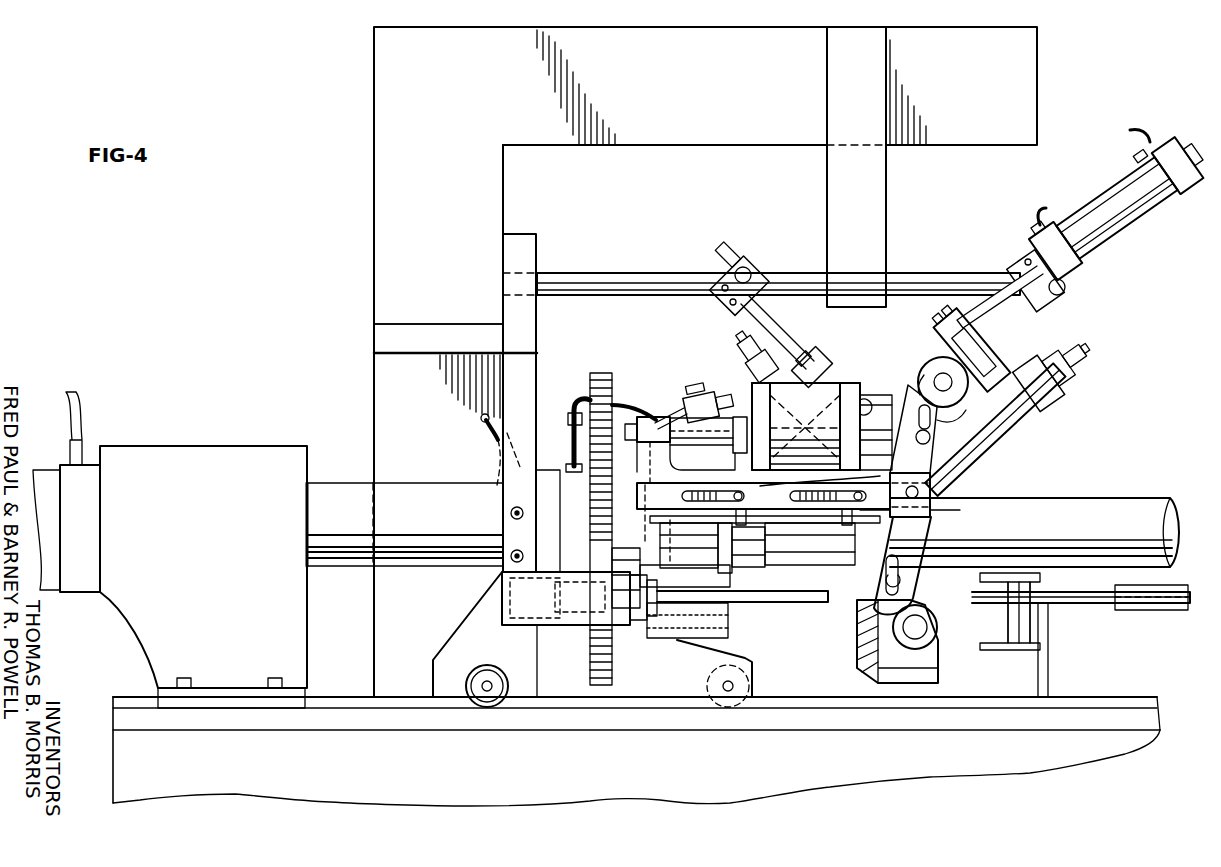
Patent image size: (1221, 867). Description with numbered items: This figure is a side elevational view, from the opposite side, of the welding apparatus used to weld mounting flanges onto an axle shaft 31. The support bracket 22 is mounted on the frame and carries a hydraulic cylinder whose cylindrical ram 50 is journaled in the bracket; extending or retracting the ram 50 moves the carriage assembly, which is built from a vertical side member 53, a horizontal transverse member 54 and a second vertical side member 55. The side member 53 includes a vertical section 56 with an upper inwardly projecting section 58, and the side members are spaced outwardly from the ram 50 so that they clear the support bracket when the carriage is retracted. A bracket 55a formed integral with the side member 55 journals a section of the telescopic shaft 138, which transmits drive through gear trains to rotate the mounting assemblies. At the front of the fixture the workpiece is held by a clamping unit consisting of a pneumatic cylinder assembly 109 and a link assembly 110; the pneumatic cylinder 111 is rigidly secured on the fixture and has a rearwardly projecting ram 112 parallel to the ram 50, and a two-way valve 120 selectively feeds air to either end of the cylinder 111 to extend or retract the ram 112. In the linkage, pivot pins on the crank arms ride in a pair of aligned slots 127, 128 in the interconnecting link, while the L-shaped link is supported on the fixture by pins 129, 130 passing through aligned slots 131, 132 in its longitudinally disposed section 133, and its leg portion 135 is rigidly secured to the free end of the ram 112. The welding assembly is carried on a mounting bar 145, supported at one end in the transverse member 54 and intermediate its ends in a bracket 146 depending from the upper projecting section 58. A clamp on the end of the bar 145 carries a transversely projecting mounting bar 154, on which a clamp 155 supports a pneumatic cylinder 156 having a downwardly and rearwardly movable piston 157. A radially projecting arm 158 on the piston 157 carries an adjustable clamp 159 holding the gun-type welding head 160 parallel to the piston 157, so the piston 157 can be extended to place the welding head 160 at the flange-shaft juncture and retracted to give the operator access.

The support bracket 22 is at (226, 438).
The axle shaft 31 is at (1113, 500).
The cylindrical ram 50 is at (430, 487).
The vertical side member 53 is at (368, 255).
The horizontal transverse member 54 is at (543, 358).
The vertical side member 55 is at (447, 626).
The bracket 55a is at (500, 580).
The vertical section 56 is at (374, 308).
The upper inwardly projecting section 58 is at (686, 152).
The pneumatic cylinder assembly 109 is at (850, 380).
The link assembly 110 is at (932, 519).
The pneumatic cylinder 111 is at (826, 382).
The ram 112 is at (688, 432).
The two-way valve 120 is at (688, 380).
The slot 127 is at (956, 412).
The slot 128 is at (906, 578).
The pin 129 is at (760, 486).
The pin 130 is at (832, 520).
The slot 131 is at (696, 484).
The slot 132 is at (940, 487).
The longitudinally disposed section 133 is at (655, 500).
The leg portion 135 is at (644, 412).
The telescopic shaft 138 is at (1140, 605).
The mounting bar 145 is at (645, 273).
The bracket 146 is at (878, 210).
The mounting bar 154 is at (1068, 290).
The clamp 155 is at (1072, 275).
The pneumatic cylinder 156 is at (1132, 222).
The piston 157 is at (984, 316).
The radially projecting arm 158 is at (984, 357).
The adjustable clamp 159 is at (1058, 404).
The welding head 160 is at (1044, 426).